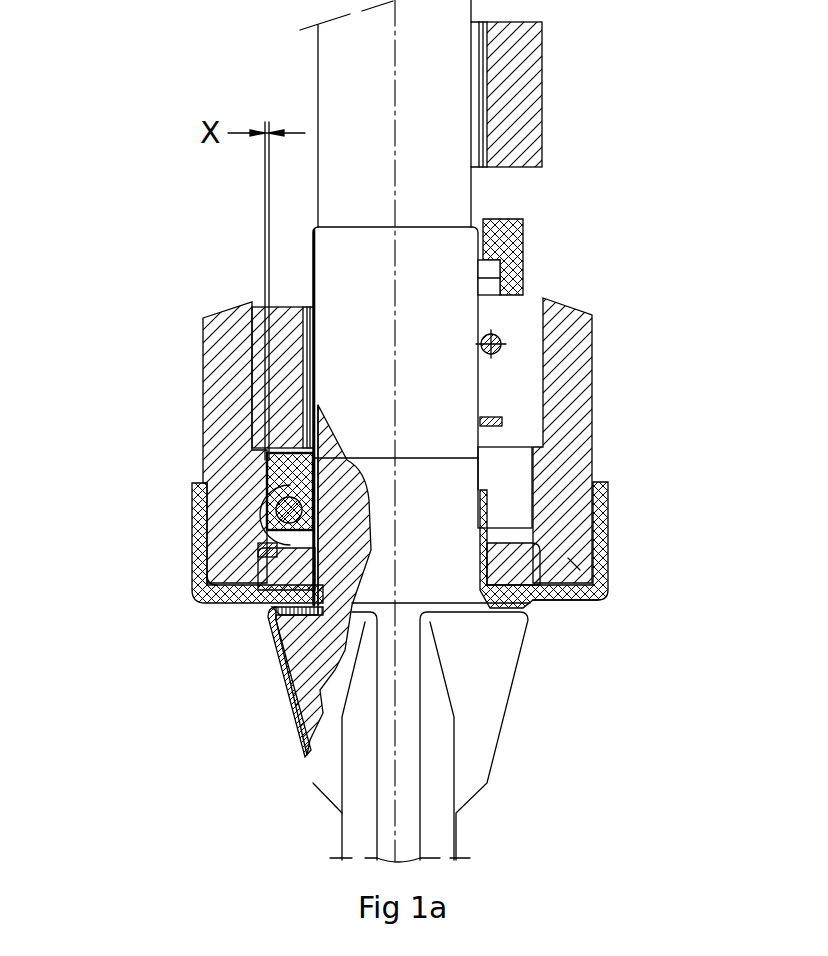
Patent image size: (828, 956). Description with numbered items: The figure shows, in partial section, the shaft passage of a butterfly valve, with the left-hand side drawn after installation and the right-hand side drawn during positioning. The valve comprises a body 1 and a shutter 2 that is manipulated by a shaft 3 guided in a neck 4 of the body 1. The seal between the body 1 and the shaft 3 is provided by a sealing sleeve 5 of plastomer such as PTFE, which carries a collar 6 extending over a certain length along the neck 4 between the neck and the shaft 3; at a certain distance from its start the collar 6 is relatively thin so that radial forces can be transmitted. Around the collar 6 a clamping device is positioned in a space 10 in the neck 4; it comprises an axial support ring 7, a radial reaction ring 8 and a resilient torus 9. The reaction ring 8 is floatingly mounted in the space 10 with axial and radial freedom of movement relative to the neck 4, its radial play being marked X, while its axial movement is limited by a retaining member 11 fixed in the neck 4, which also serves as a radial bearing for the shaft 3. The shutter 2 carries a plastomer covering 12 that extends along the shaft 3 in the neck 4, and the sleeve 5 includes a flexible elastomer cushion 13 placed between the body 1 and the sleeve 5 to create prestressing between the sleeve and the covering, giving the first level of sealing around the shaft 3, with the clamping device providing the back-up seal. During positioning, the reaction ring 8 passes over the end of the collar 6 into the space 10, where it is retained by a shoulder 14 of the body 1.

The body 1 is at (607, 583).
The shutter 2 is at (358, 835).
The shaft 3 is at (380, 582).
The neck 4 is at (515, 380).
The sealing sleeve 5 is at (255, 547).
The collar 6 is at (487, 510).
The axial support ring 7 is at (503, 422).
The radial reaction ring 8 is at (527, 237).
The resilient torus 9 is at (502, 340).
The space 10 is at (513, 473).
The retaining member 11 is at (518, 108).
The covering 12 is at (312, 710).
The flexible cushion 13 is at (247, 597).
The shoulder 14 is at (565, 600).